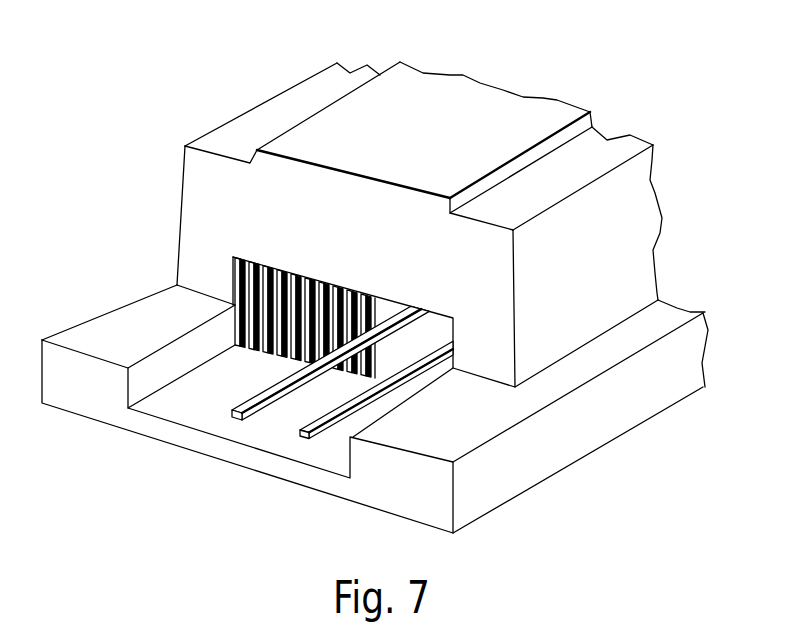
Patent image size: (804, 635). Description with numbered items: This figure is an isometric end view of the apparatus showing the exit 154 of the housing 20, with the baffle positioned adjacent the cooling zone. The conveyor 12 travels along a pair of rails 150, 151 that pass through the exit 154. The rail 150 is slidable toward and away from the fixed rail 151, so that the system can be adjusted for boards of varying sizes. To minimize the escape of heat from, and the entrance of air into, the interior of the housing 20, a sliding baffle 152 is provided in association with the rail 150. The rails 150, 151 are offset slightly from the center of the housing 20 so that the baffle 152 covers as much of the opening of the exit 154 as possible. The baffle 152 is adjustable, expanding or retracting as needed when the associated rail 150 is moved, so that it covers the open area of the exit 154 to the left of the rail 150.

The conveyor 12 is at (313, 450).
The housing 20 is at (419, 226).
The rail 150 is at (283, 378).
The fixed rail 151 is at (397, 384).
The sliding baffle 152 is at (248, 279).
The exit 154 is at (393, 290).